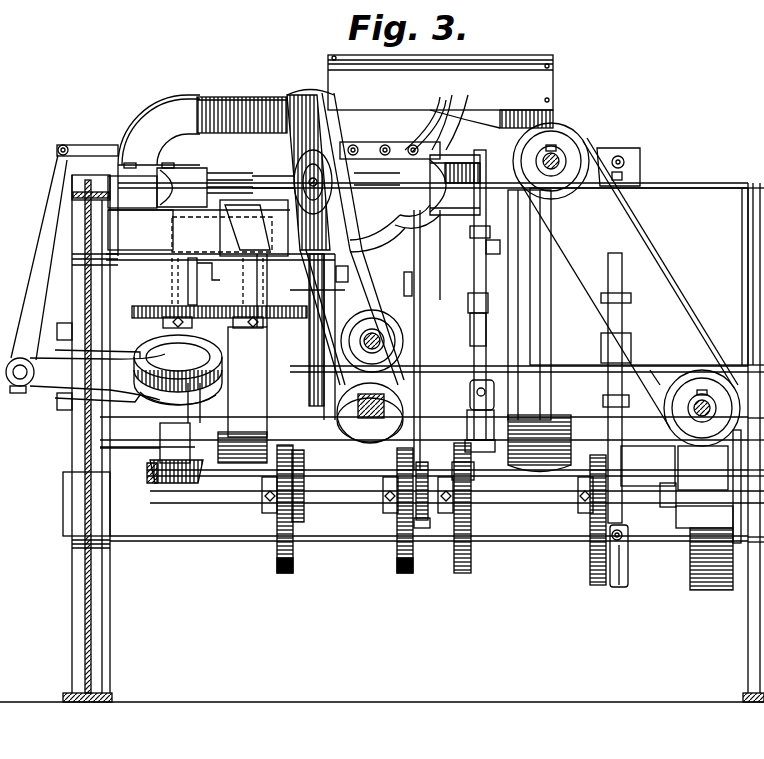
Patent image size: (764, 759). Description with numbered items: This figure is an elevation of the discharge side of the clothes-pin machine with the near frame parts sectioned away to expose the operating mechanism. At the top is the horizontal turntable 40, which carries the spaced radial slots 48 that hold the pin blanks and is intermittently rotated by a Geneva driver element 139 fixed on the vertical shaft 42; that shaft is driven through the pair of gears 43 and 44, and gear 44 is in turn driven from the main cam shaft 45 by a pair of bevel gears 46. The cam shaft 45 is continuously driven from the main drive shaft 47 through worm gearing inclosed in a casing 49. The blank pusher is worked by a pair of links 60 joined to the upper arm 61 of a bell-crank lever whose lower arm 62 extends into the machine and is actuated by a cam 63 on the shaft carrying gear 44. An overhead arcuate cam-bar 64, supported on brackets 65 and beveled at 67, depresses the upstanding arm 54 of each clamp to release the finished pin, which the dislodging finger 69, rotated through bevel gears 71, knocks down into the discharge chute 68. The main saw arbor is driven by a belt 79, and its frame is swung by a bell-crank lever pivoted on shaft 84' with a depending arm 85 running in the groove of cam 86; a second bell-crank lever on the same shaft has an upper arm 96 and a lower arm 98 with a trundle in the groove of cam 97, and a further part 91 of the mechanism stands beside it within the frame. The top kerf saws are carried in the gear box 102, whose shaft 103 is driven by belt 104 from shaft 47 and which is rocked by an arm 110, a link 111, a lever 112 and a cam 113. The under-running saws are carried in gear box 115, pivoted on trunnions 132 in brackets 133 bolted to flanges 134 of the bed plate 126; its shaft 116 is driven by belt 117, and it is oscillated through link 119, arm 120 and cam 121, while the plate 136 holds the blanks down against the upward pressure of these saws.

The links 60 is at (92, 146).
The radial slots 48 is at (29, 256).
The upper arm of bell-crank lever 61 is at (30, 291).
The lower arm of bell-crank lever 62 is at (56, 398).
The brackets 65 is at (146, 112).
The cam-bar 64 is at (255, 100).
The beveled end of cam-bar 67 is at (412, 116).
The plate 136 is at (450, 125).
The gear box 102 is at (540, 128).
The shaft 103 is at (560, 176).
The arm 110 is at (601, 148).
The belt 104 is at (636, 207).
The bed plate 126 is at (706, 182).
The bevel gears 71 is at (157, 190).
The turntable 40 is at (316, 166).
The shaft 116 is at (357, 145).
The upstanding arm 54 is at (380, 146).
The trunnions 132 is at (393, 143).
The gear box 115 is at (382, 224).
The link 119 is at (492, 228).
The brackets 133 is at (500, 246).
The driver element 139 is at (140, 230).
The vertical shaft 42 is at (199, 231).
The dislodging finger 69 is at (254, 228).
The discharge chute 68 is at (196, 243).
The flanges 134 is at (352, 272).
The belt 117 is at (348, 291).
The gear 44 is at (150, 306).
The gear 43 is at (213, 307).
The upper arm of bell-crank lever 96 is at (422, 330).
The column 91 is at (539, 331).
The cam 63 is at (160, 352).
The belt 79 is at (242, 358).
The shaft 84' is at (360, 426).
The arm 120 is at (481, 441).
The cam 121 is at (468, 472).
The link 111 is at (622, 466).
The main drive shaft 47 is at (705, 420).
The bevel gears 46 is at (162, 514).
The cam shaft 45 is at (224, 503).
The depending arm 85 is at (306, 518).
The lower arm of bell-crank lever 98 is at (426, 532).
The cam 86 is at (283, 574).
The cam 97 is at (400, 576).
The cam 113 is at (600, 582).
The lever 112 is at (616, 588).
The casing 49 is at (690, 590).